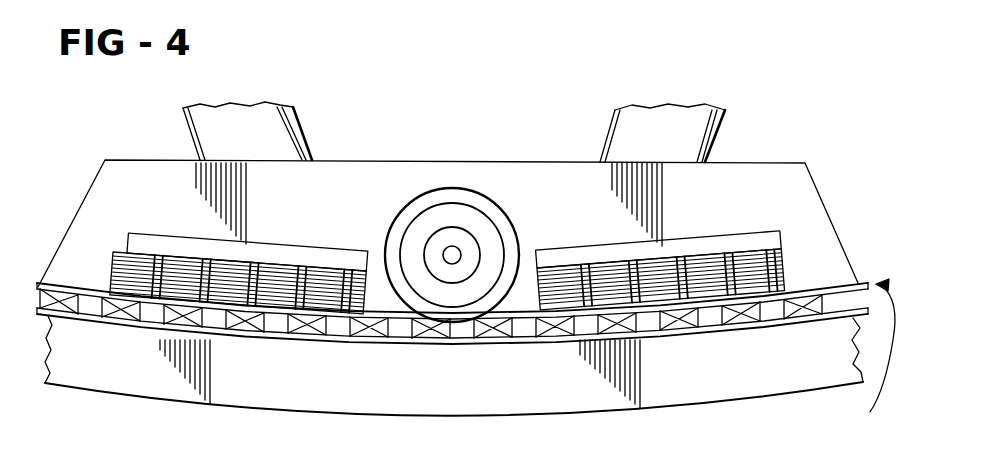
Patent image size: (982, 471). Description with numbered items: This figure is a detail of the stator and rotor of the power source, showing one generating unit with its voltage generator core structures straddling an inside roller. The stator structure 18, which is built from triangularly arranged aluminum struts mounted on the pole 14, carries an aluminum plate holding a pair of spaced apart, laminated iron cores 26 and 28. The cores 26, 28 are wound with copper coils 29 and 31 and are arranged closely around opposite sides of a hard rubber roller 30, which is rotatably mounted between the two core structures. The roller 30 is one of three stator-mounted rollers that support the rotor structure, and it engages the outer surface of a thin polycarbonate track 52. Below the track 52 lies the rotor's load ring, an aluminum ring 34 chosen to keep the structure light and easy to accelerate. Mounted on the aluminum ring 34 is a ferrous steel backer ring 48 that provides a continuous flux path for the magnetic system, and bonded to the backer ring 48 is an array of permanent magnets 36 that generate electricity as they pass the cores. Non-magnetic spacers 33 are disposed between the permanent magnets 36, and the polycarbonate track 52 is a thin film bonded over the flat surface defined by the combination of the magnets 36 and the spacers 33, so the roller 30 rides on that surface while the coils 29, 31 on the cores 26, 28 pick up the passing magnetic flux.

The pole 14 is at (300, 120).
The stator structure 18 is at (762, 162).
The ferromagnetic iron core 26 is at (693, 237).
The ferromagnetic iron core 28 is at (277, 245).
The copper coil 29 is at (797, 262).
The roller 30 is at (455, 188).
The copper coil 31 is at (105, 262).
The non-magnetic spacer 33 is at (103, 312).
The aluminum ring 34 is at (270, 377).
The permanent magnet 36 is at (485, 342).
The ferrous metal backer ring 48 is at (720, 327).
The polycarbonate track 52 is at (877, 358).